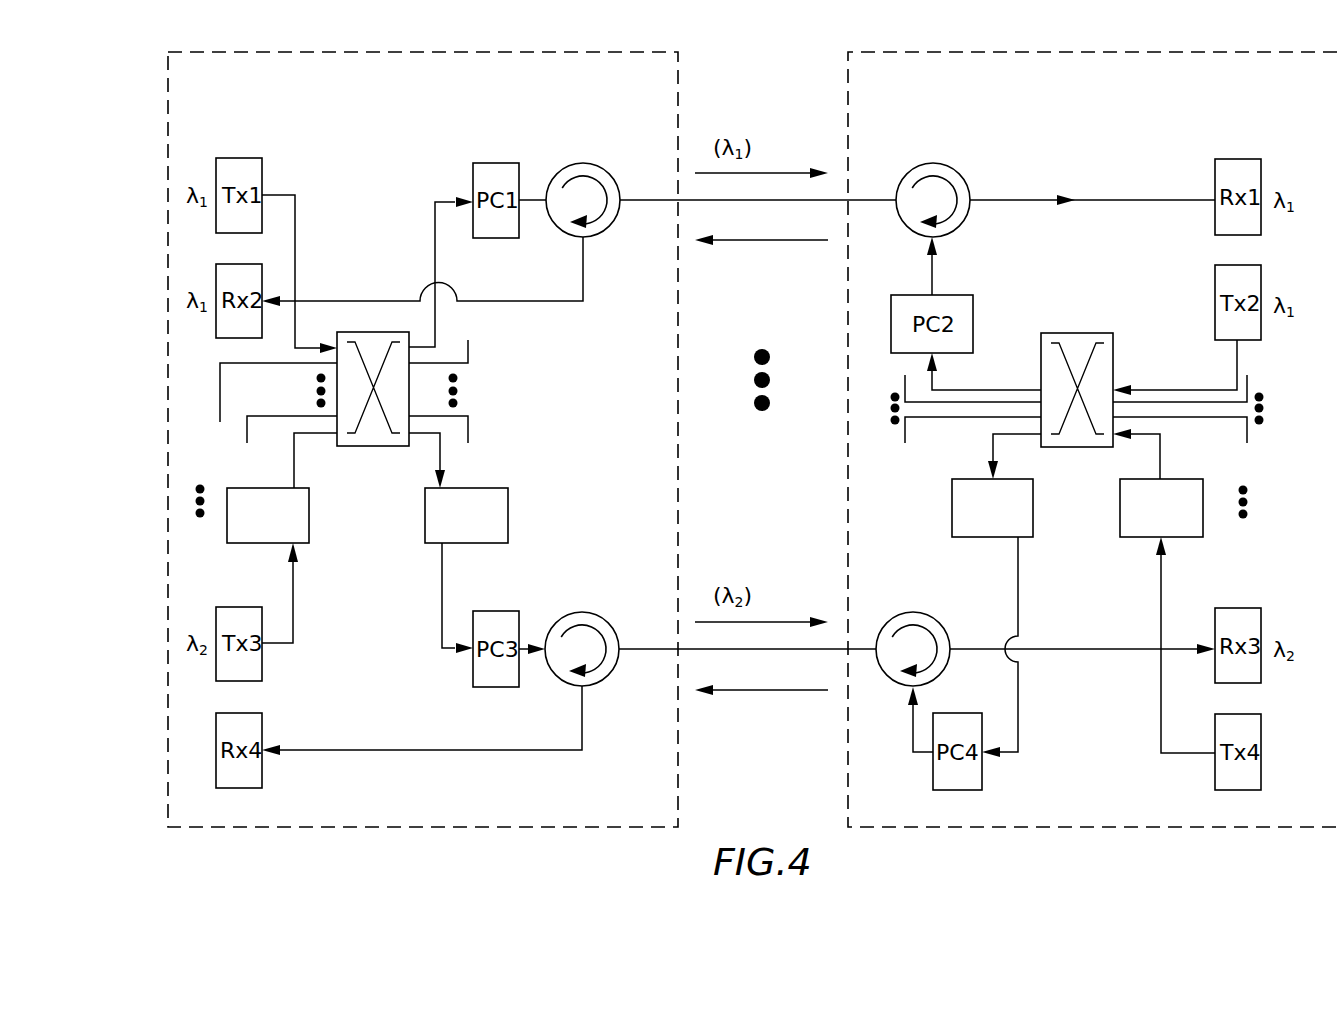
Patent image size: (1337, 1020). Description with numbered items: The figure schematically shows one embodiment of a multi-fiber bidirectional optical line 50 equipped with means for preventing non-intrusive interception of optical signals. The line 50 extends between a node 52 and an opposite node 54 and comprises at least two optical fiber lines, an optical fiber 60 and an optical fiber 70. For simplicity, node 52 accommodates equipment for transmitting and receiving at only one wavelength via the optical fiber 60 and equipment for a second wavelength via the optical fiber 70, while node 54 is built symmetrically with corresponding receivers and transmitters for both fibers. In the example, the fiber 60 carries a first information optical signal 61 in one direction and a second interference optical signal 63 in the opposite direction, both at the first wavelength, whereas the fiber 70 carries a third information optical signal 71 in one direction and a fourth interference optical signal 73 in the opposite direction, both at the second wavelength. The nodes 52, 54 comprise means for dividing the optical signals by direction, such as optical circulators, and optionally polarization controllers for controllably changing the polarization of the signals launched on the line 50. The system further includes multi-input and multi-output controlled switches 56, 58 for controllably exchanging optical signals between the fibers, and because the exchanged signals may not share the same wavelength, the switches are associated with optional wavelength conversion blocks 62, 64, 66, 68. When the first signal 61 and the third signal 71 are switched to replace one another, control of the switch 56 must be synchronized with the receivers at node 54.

The multi-fiber bidirectional optical line 50 is at (733, 80).
The node 52 is at (603, 52).
The node 54 is at (1280, 52).
The controlled optical switch 56 is at (373, 332).
The controlled optical switch 58 is at (1077, 333).
The optical fiber 60 is at (841, 198).
The first optical signal 61 is at (759, 172).
The wavelength conversion block 62 is at (244, 488).
The second optical signal 63 is at (760, 243).
The wavelength conversion block 64 is at (492, 488).
The wavelength conversion block 66 is at (967, 479).
The wavelength conversion block 68 is at (1162, 479).
The optical fiber 70 is at (841, 647).
The third optical signal 71 is at (759, 621).
The fourth optical signal 73 is at (760, 692).